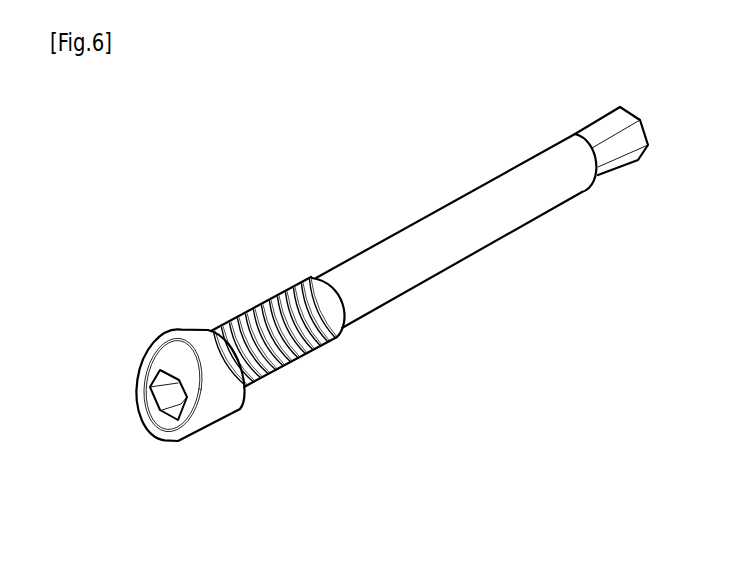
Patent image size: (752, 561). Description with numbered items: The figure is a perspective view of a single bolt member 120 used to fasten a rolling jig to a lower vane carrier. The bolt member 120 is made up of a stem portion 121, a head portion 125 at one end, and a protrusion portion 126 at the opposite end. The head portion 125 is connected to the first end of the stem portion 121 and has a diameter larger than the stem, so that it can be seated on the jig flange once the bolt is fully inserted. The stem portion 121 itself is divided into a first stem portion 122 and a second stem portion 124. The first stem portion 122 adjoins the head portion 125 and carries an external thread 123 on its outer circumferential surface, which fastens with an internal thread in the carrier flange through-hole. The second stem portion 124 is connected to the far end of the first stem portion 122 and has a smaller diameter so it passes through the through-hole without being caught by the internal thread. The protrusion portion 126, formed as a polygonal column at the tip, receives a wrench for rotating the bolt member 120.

The bolt member 120 is at (105, 254).
The stem portion 121 is at (292, 179).
The first stem portion 122 is at (264, 270).
The external thread 123 is at (328, 343).
The second stem portion 124 is at (341, 224).
The head portion 125 is at (230, 409).
The protrusion portion 126 is at (622, 162).